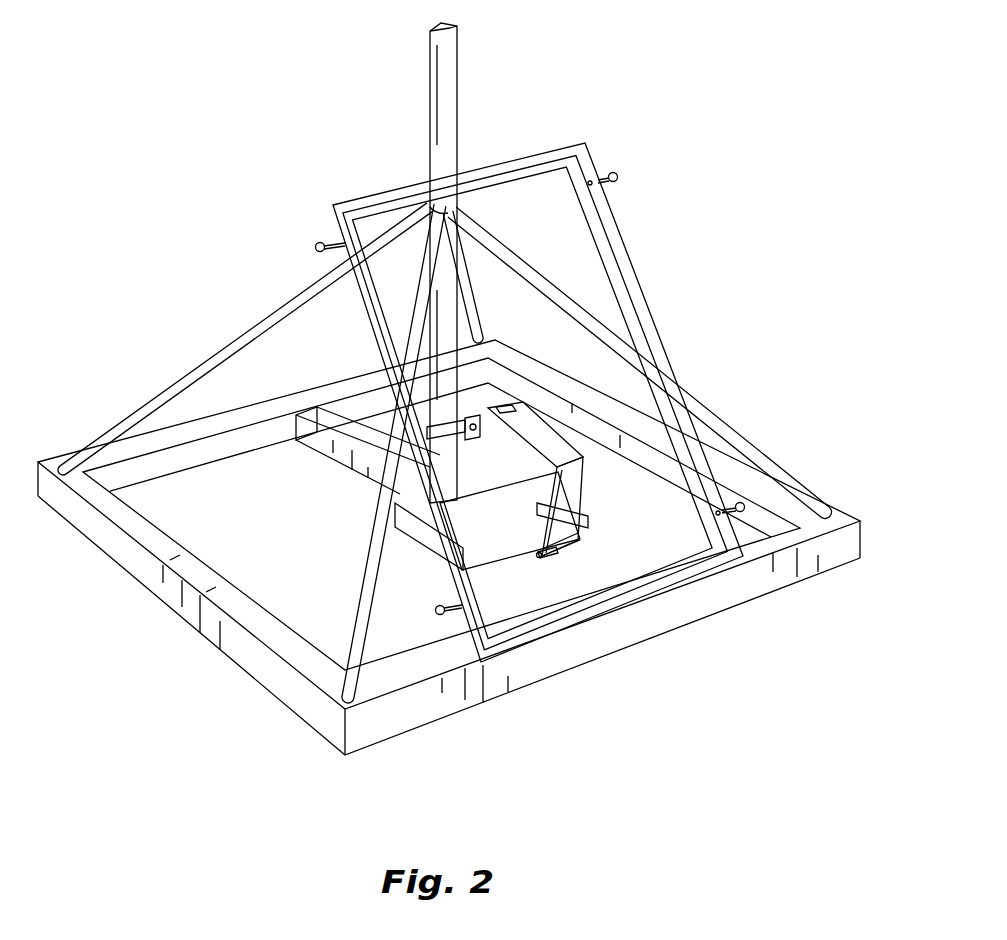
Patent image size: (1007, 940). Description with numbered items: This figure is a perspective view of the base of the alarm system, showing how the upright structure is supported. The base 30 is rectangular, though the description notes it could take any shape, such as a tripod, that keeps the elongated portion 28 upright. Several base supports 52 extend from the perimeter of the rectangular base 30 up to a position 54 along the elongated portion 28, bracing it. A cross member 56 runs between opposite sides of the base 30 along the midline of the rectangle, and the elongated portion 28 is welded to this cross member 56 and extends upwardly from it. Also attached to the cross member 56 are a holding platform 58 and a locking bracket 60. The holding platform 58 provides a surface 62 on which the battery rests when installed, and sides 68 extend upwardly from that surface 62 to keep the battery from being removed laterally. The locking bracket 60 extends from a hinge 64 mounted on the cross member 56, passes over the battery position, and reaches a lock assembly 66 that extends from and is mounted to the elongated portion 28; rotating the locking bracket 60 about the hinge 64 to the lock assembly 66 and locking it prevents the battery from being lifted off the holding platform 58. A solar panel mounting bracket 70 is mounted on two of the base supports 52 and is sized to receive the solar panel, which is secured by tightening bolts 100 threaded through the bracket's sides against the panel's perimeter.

The elongated portion 28 is at (432, 130).
The base 30 is at (137, 565).
The base supports 52 is at (235, 345).
The position along the elongated portion 54 is at (420, 233).
The cross member 56 is at (303, 448).
The holding platform 58 is at (578, 558).
The locking bracket 60 is at (570, 483).
The surface 62 is at (510, 537).
The hinge 64 is at (545, 560).
The lock assembly 66 is at (483, 425).
The sides 68 is at (420, 535).
The solar panel mounting bracket 70 is at (632, 258).
The bolts 100 is at (618, 177).